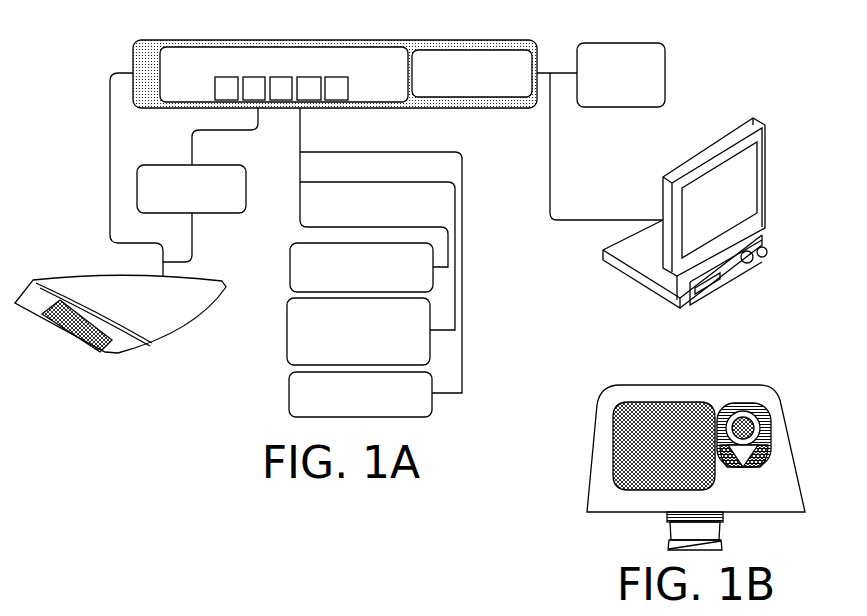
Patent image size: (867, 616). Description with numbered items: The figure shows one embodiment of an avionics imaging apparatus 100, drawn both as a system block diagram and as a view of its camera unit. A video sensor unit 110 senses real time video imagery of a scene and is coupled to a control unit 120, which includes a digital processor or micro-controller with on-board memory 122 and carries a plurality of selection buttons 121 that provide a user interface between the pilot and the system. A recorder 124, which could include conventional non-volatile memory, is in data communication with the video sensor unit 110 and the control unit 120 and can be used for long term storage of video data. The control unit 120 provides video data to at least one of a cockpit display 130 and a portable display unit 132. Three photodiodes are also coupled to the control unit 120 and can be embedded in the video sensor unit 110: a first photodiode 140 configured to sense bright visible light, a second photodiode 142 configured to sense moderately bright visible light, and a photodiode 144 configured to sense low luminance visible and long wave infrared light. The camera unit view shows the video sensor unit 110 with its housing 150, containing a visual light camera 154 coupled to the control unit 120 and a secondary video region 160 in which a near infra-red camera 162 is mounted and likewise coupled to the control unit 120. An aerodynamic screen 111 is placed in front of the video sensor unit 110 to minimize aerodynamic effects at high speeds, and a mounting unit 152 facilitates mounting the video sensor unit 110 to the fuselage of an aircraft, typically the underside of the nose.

In FIG. 1A, the avionics imaging apparatus 100 is at (50, 86).
In FIG. 1A, the video sensor unit 110 is at (104, 277).
In FIG. 1B, the video sensor unit 110 is at (752, 384).
In FIG. 1A, the aerodynamic screen 111 is at (60, 335).
In FIG. 1A, the control unit 120 is at (245, 41).
In FIG. 1A, the selection buttons 121 is at (348, 80).
In FIG. 1A, the digital processor and on-board memory 122 is at (475, 50).
In FIG. 1A, the recorder 124 is at (157, 165).
In FIG. 1A, the cockpit display 130 is at (622, 43).
In FIG. 1A, the portable display unit 132 is at (714, 152).
In FIG. 1A, the first photodiode 140 is at (290, 268).
In FIG. 1B, the first photodiode 140 is at (760, 450).
In FIG. 1A, the second photodiode 142 is at (287, 333).
In FIG. 1B, the second photodiode 142 is at (755, 458).
In FIG. 1A, the photodiode 144 is at (289, 395).
In FIG. 1B, the photodiode 144 is at (752, 466).
In FIG. 1B, the camera housing 150 is at (750, 498).
In FIG. 1B, the mounting unit 152 is at (668, 522).
In FIG. 1B, the visual light camera 154 is at (652, 402).
In FIG. 1B, the secondary video region 160 is at (740, 405).
In FIG. 1B, the near infra-red camera 162 is at (765, 432).